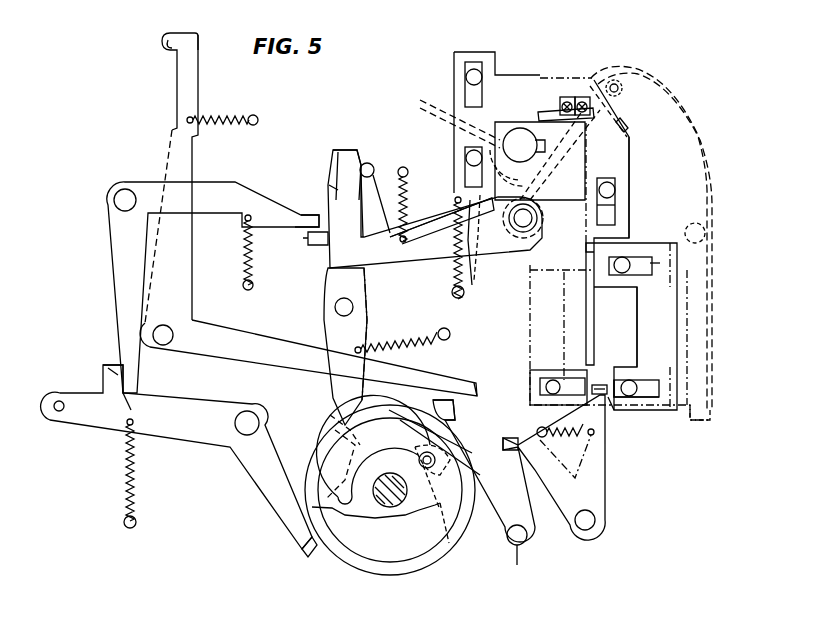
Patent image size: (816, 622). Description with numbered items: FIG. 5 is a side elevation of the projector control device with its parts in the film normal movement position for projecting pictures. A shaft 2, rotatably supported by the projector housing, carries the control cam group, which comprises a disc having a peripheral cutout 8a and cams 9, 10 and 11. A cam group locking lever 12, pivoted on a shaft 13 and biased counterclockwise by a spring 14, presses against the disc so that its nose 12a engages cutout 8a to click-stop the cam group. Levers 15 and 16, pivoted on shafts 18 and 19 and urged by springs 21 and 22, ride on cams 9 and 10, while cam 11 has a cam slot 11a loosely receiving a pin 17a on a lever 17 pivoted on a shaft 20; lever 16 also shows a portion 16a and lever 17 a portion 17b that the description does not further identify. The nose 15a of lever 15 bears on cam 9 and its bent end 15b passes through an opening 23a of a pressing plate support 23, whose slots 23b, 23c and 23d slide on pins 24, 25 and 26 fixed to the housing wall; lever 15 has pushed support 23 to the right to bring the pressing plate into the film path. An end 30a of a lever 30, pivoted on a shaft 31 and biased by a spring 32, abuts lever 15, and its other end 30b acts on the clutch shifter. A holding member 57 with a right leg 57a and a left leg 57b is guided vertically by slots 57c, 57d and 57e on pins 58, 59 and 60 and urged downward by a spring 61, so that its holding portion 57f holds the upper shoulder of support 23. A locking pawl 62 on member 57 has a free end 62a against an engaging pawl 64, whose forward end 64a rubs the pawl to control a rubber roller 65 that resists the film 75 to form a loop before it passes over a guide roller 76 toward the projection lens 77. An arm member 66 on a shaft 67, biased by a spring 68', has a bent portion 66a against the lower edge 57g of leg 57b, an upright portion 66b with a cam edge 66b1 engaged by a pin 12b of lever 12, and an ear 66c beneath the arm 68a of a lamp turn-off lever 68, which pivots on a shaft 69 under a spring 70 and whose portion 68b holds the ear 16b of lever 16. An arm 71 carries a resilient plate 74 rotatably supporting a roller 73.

The shaft 2 is at (388, 515).
The cutout 8a is at (340, 560).
The cam 9 is at (425, 562).
The cam 10 is at (400, 575).
The cam 11 is at (325, 555).
The cam slot 11a is at (333, 420).
The cam group locking lever 12 is at (332, 331).
The nose 12a is at (332, 432).
The pin 12b is at (372, 167).
The shaft 13 is at (334, 305).
The spring 14 is at (405, 349).
The lever 15 is at (607, 508).
The nose 15a is at (455, 412).
The bent end portion 15b is at (600, 384).
The lever 16 is at (270, 497).
The lever foot 16a is at (302, 548).
The bent portion 16b is at (105, 362).
The lever 17 is at (525, 548).
The pin 17a is at (450, 550).
The stop pin 17b is at (515, 445).
The shaft 18 is at (587, 532).
The shaft 19 is at (237, 435).
The shaft 20 is at (517, 565).
The spring 21 is at (574, 438).
The spring 22 is at (134, 466).
The pressing plate support 23 is at (663, 420).
The opening 23a is at (602, 410).
The slot 23b is at (660, 263).
The slot 23c is at (650, 378).
The slot 23d is at (605, 420).
The pin 24 is at (630, 256).
The pin 25 is at (640, 350).
The pin 26 is at (530, 372).
The lever 30 is at (228, 328).
The end portion 30a is at (470, 378).
The end portion 30b is at (165, 46).
The shaft 31 is at (163, 345).
The spring 32 is at (226, 118).
The holding member 57 is at (510, 80).
The right leg 57a is at (626, 154).
The left leg 57b is at (473, 180).
The slot 57c is at (613, 204).
The slot 57d is at (468, 88).
The slot 57e is at (483, 250).
The holding portion 57f is at (586, 246).
The lower end edge 57g is at (403, 250).
The pin 58 is at (617, 185).
The pin 59 is at (477, 68).
The pin 60 is at (468, 142).
The spring 61 is at (464, 297).
The locking pawl 62 is at (590, 82).
The free end 62a is at (570, 97).
The engaging pawl 64 is at (512, 130).
The forward end 64a is at (580, 60).
The rubber roller 65 is at (448, 105).
The arm member 66 is at (378, 290).
The bent portion 66a is at (475, 282).
The upright portion 66b is at (347, 152).
The cam edge 66b1 is at (328, 184).
The bent ear 66c is at (308, 239).
The shaft 67 is at (538, 215).
The lamp turn-off lever 68 is at (213, 274).
The spring 68' is at (442, 221).
The arm 68a is at (304, 212).
The engaging portion 68b is at (110, 430).
The shaft 69 is at (126, 190).
The spring 70 is at (252, 268).
The arm 71 is at (630, 128).
The roller 73 is at (640, 73).
The resilient plate 74 is at (620, 94).
The film 75 is at (704, 130).
The guide roller 76 is at (690, 224).
The projection lens 77 is at (705, 418).